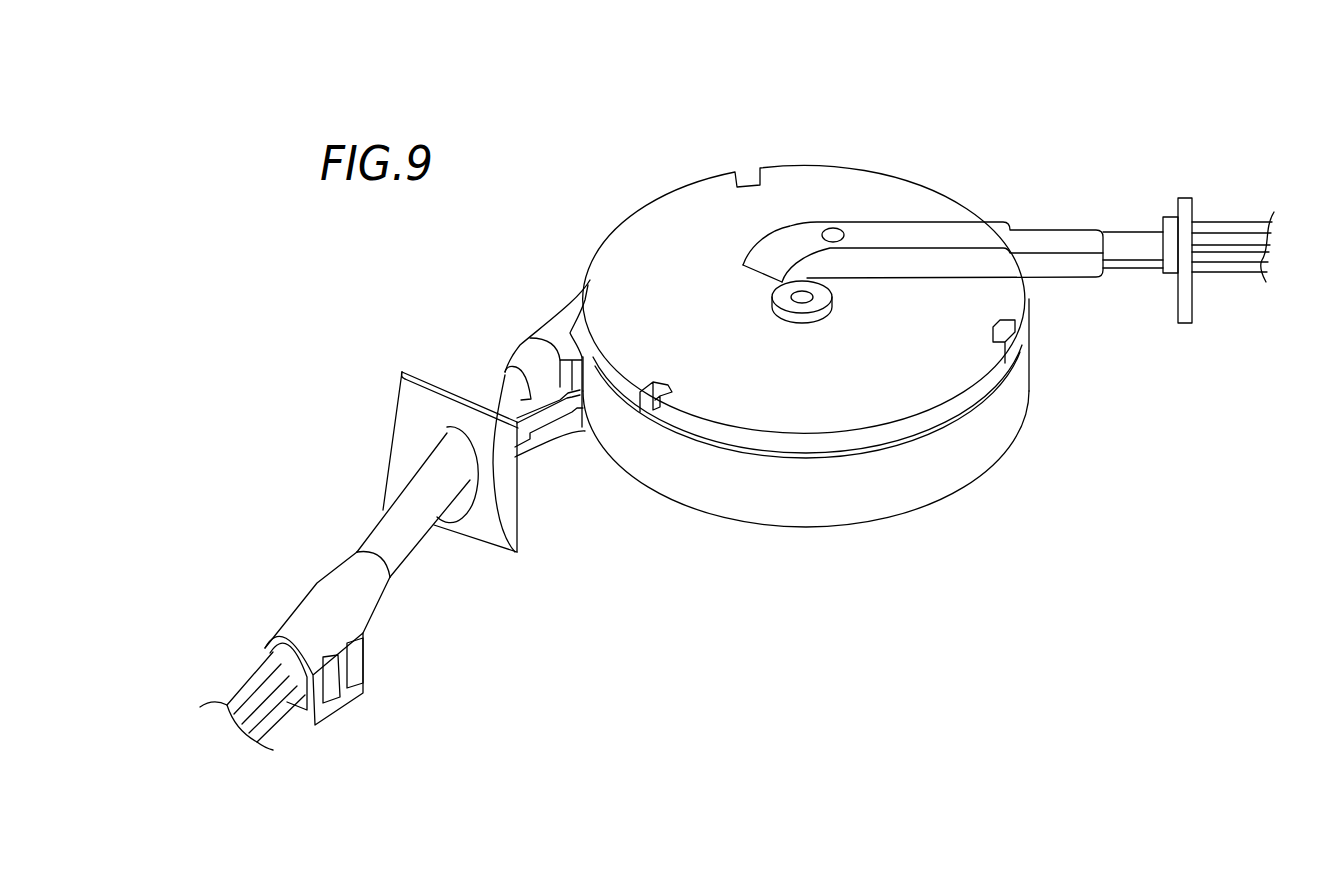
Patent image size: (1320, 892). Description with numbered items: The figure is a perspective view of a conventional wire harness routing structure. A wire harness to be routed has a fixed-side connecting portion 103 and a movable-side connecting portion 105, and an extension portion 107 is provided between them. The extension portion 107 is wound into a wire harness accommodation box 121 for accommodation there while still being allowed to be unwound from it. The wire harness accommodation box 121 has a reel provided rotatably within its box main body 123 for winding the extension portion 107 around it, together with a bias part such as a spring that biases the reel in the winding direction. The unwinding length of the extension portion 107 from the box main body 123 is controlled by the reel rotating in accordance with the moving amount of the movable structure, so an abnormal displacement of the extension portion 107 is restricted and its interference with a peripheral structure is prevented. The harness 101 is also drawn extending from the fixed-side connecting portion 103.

The wire harness accommodation box 121 is at (842, 145).
The box main body 123 is at (895, 200).
The fixed-side connecting portion 103 is at (1182, 300).
The cable 101 is at (1255, 288).
The extension portion 107 is at (410, 518).
The movable-side connecting portion 105 is at (345, 697).